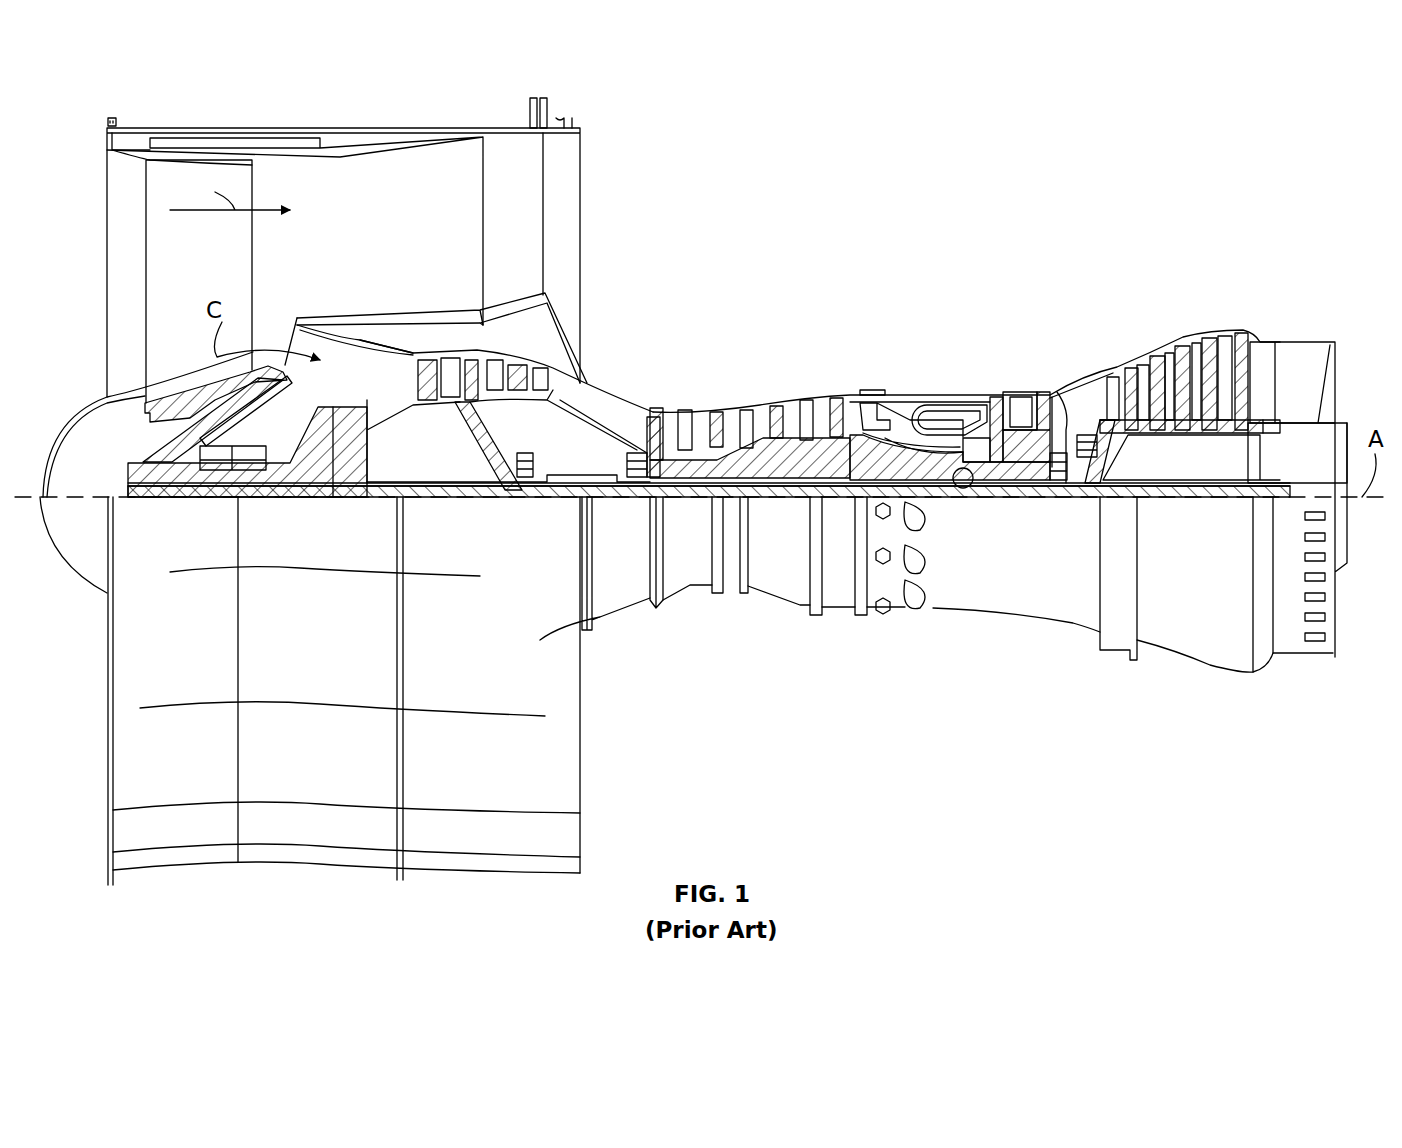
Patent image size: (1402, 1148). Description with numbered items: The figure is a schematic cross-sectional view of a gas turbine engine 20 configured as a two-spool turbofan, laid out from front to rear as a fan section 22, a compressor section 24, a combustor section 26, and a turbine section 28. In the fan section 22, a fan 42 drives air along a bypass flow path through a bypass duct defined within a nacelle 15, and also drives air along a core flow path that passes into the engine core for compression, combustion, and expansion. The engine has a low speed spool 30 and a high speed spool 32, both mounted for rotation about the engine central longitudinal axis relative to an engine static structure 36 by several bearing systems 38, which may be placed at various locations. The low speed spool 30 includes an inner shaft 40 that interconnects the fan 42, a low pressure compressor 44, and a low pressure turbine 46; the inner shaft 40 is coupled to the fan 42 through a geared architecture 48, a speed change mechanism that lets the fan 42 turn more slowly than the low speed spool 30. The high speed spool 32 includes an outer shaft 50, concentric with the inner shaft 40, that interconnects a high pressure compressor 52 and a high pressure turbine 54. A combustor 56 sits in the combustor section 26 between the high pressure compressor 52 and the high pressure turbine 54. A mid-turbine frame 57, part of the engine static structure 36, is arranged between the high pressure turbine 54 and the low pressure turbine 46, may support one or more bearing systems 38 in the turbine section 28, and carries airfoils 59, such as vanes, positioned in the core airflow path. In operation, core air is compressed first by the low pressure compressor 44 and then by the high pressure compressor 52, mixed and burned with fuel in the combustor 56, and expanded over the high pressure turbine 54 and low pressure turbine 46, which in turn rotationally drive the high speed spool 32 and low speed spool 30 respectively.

The gas turbine engine 20 is at (1152, 163).
The fan section 22 is at (215, 127).
The nacelle 15 is at (348, 128).
The fan 42 is at (226, 258).
The geared architecture 48 is at (336, 466).
The low pressure compressor 44 is at (478, 365).
The bearing systems 38 is at (520, 470).
The low speed spool 30 is at (805, 500).
The compressor section 24 is at (645, 395).
The high pressure compressor 52 is at (760, 455).
The high speed spool 32 is at (835, 450).
The combustor section 26 is at (935, 360).
The combustor 56 is at (945, 415).
The high pressure turbine 54 is at (1018, 392).
The mid-turbine frame 57 is at (1071, 382).
The low pressure turbine 46 is at (1185, 355).
The turbine section 28 is at (1085, 262).
The airfoils 59 is at (1070, 407).
The inner shaft 40 is at (595, 500).
The engine static structure 36 is at (840, 612).
The outer shaft 50 is at (965, 476).